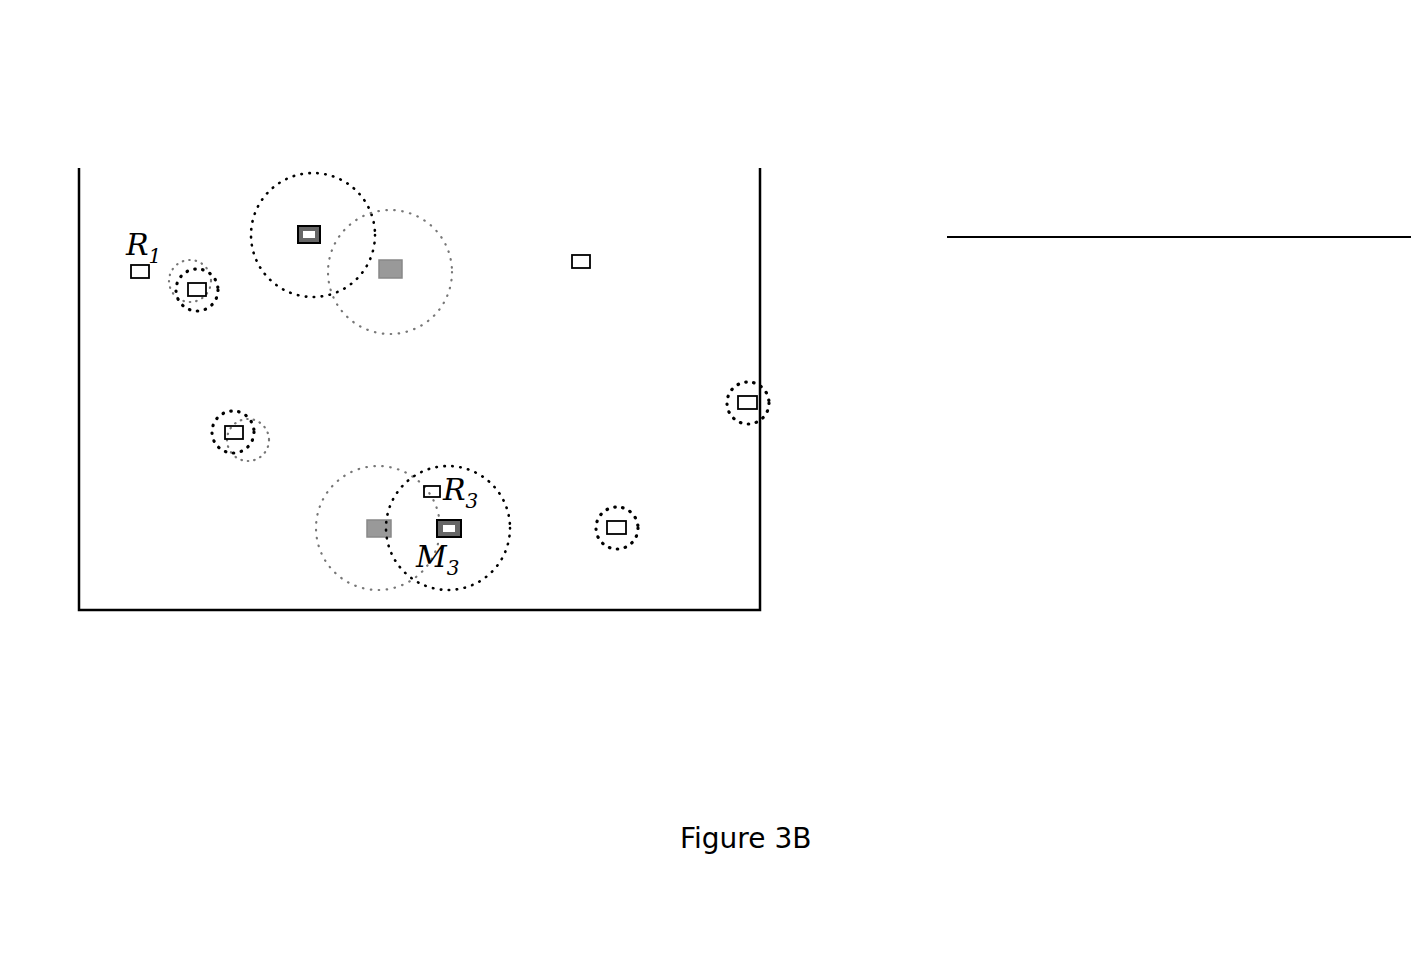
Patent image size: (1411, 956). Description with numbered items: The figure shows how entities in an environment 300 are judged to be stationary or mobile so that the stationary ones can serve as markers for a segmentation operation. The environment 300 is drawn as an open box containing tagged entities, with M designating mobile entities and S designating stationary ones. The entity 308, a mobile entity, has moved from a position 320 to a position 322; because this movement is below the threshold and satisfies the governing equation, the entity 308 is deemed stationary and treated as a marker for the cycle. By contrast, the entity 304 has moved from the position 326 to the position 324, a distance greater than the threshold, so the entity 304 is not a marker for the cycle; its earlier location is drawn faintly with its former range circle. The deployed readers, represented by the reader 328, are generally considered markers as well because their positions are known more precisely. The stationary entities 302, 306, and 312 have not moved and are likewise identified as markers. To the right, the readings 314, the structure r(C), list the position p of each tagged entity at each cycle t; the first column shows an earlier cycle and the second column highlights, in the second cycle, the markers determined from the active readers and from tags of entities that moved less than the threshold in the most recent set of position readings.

The environment 300 is at (668, 124).
The entity 302 is at (185, 206).
The entity 304 is at (355, 143).
The entity 306 is at (719, 381).
The entity 308 is at (251, 429).
The entity 312 is at (658, 522).
The readings 314 is at (1072, 668).
The position 320 is at (258, 422).
The position 322 is at (233, 439).
The position 324 is at (307, 224).
The position 326 is at (397, 268).
The reader 328 is at (599, 215).